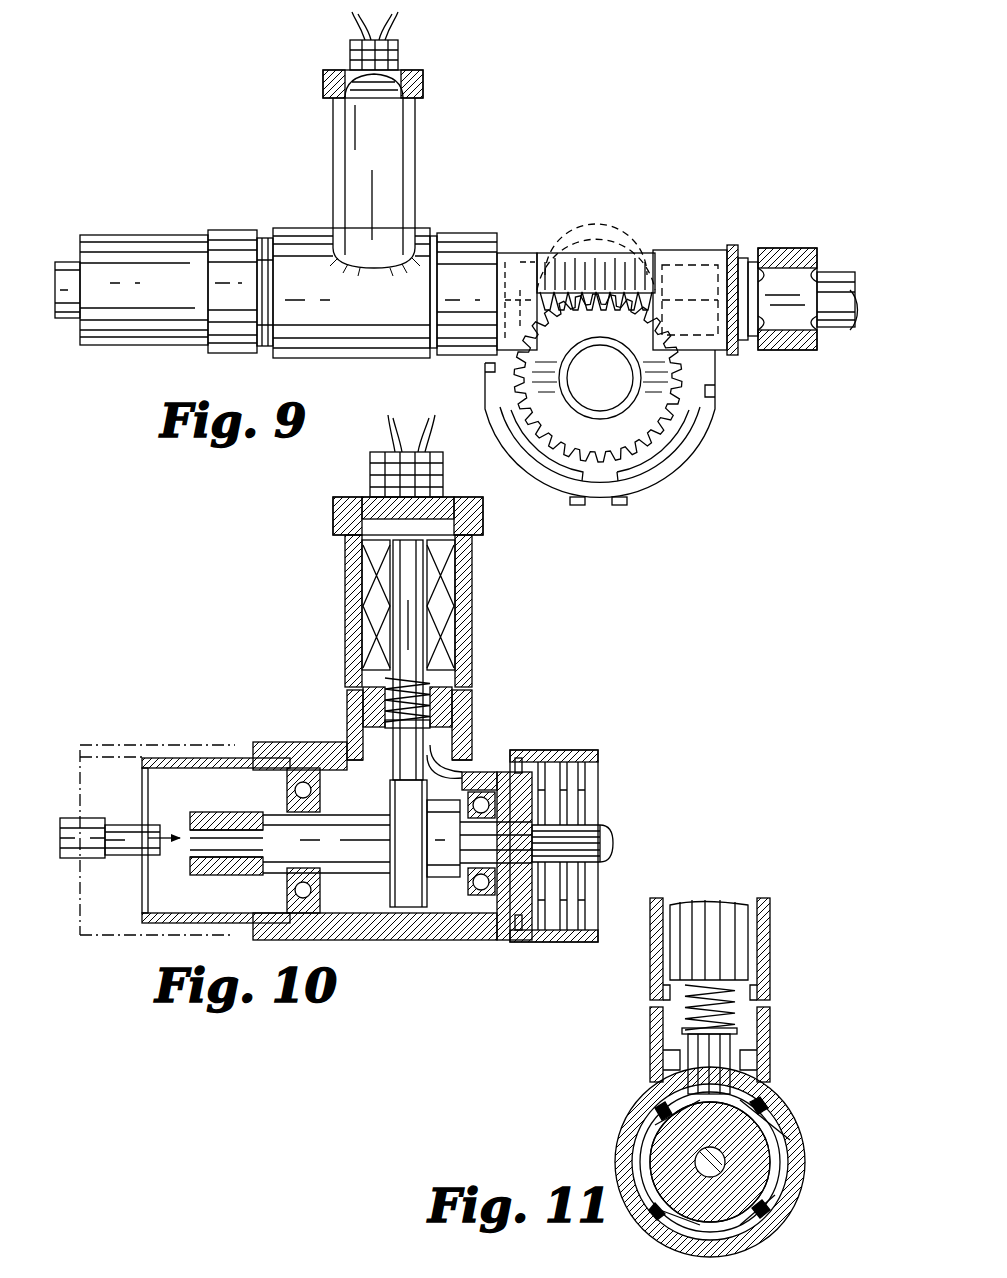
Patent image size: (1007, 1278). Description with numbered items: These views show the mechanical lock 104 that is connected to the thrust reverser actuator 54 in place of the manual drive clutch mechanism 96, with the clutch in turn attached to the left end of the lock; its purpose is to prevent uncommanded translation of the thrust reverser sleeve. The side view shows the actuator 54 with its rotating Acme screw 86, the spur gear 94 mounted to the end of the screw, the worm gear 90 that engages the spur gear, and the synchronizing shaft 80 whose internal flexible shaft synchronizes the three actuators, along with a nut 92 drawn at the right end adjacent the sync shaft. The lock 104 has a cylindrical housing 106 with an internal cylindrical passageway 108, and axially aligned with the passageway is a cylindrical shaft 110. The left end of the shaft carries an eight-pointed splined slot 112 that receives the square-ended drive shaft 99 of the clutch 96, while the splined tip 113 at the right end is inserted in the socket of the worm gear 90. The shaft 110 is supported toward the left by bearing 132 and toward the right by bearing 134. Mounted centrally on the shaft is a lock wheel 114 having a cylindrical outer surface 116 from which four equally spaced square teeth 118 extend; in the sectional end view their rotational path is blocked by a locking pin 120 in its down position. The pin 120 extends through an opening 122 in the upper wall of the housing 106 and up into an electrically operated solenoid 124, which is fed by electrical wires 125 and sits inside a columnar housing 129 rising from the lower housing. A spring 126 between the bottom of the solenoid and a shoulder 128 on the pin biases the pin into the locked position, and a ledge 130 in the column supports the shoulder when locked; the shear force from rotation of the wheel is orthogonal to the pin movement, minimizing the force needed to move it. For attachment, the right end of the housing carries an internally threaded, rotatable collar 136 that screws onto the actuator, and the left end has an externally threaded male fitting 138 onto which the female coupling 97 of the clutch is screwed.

In FIG. 9, the actuator 54 is at (690, 248).
In FIG. 9, the synchronizing shaft 80 is at (838, 272).
In FIG. 9, the Acme screw 86 is at (618, 395).
In FIG. 9, the worm gear 90 is at (585, 275).
In FIG. 9, the nut 92 is at (775, 248).
In FIG. 9, the spur gear 94 is at (665, 435).
In FIG. 9, the manual drive clutch mechanism 96 is at (232, 231).
In FIG. 10, the female coupling 97 is at (162, 745).
In FIG. 10, the drive shaft 99 is at (115, 780).
In FIG. 9, the mechanical lock 104 is at (428, 88).
In FIG. 10, the mechanical lock 104 is at (427, 592).
In FIG. 11, the mechanical lock 104 is at (775, 940).
In FIG. 10, the cylindrical housing 106 is at (340, 940).
In FIG. 11, the cylindrical housing 106 is at (615, 1135).
In FIG. 10, the internal cylindrical passageway 108 is at (270, 922).
In FIG. 10, the cylindrical shaft 110 is at (275, 870).
In FIG. 11, the cylindrical shaft 110 is at (648, 1200).
In FIG. 10, the eight-pointed splined slot 112 is at (190, 840).
In FIG. 10, the splined tip 113 is at (562, 835).
In FIG. 10, the lock wheel 114 is at (408, 905).
In FIG. 11, the lock wheel 114 is at (745, 1170).
In FIG. 10, the cylindrical outer surface 116 is at (490, 882).
In FIG. 11, the cylindrical outer surface 116 is at (770, 1152).
In FIG. 10, the square teeth 118 is at (485, 898).
In FIG. 11, the square teeth 118 is at (760, 1105).
In FIG. 10, the locking pin 120 is at (418, 770).
In FIG. 11, the locking pin 120 is at (690, 1050).
In FIG. 10, the opening 122 is at (350, 752).
In FIG. 10, the solenoid 124 is at (448, 580).
In FIG. 11, the solenoid 124 is at (715, 898).
In FIG. 10, the electrical wires 125 is at (390, 436).
In FIG. 10, the spring 126 is at (450, 690).
In FIG. 11, the spring 126 is at (745, 1000).
In FIG. 10, the shoulder 128 is at (385, 702).
In FIG. 10, the columnar housing 129 is at (345, 598).
In FIG. 10, the ledge 130 is at (425, 745).
In FIG. 10, the bearing 132 is at (305, 900).
In FIG. 10, the bearing 134 is at (494, 905).
In FIG. 9, the collar 136 is at (470, 234).
In FIG. 10, the collar 136 is at (557, 940).
In FIG. 10, the externally threaded male fitting 138 is at (205, 758).